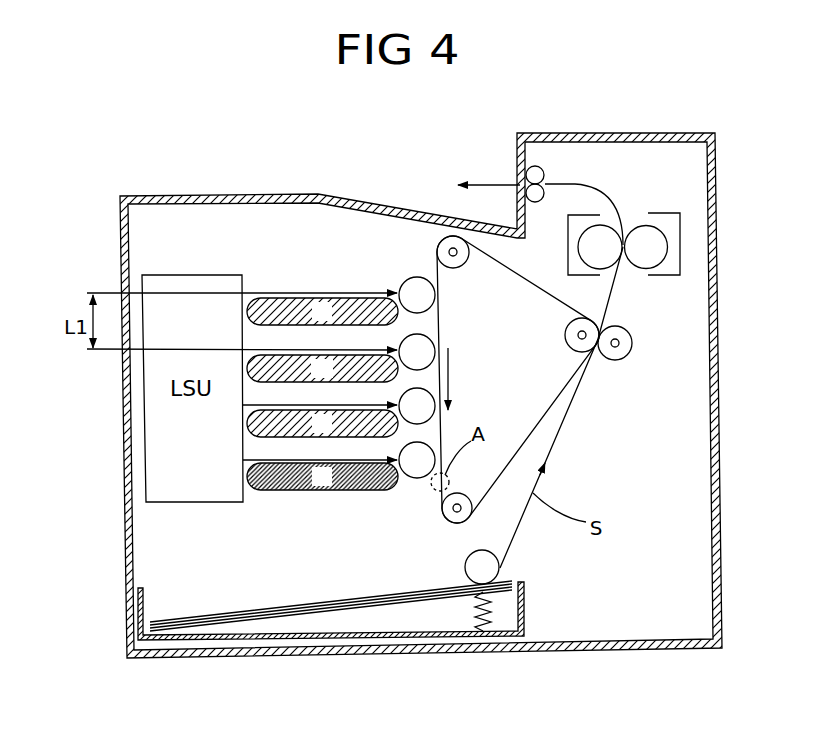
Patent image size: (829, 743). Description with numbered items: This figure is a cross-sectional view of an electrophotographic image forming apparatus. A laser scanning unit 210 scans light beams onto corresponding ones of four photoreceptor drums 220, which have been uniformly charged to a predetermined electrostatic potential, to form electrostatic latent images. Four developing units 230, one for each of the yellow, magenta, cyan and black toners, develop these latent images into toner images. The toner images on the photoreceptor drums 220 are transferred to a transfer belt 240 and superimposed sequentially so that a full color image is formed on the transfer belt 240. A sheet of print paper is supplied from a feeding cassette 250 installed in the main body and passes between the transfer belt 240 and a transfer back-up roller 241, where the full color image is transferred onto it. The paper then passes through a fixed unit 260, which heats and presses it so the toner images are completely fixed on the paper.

The laser scanning unit 210 is at (145, 428).
The photoreceptor drums 220 is at (393, 276).
The developing units 230 is at (249, 505).
The transfer belt 240 is at (523, 281).
The transfer back-up roller 241 is at (617, 360).
The feeding cassette 250 is at (292, 637).
The fixed unit 260 is at (670, 213).